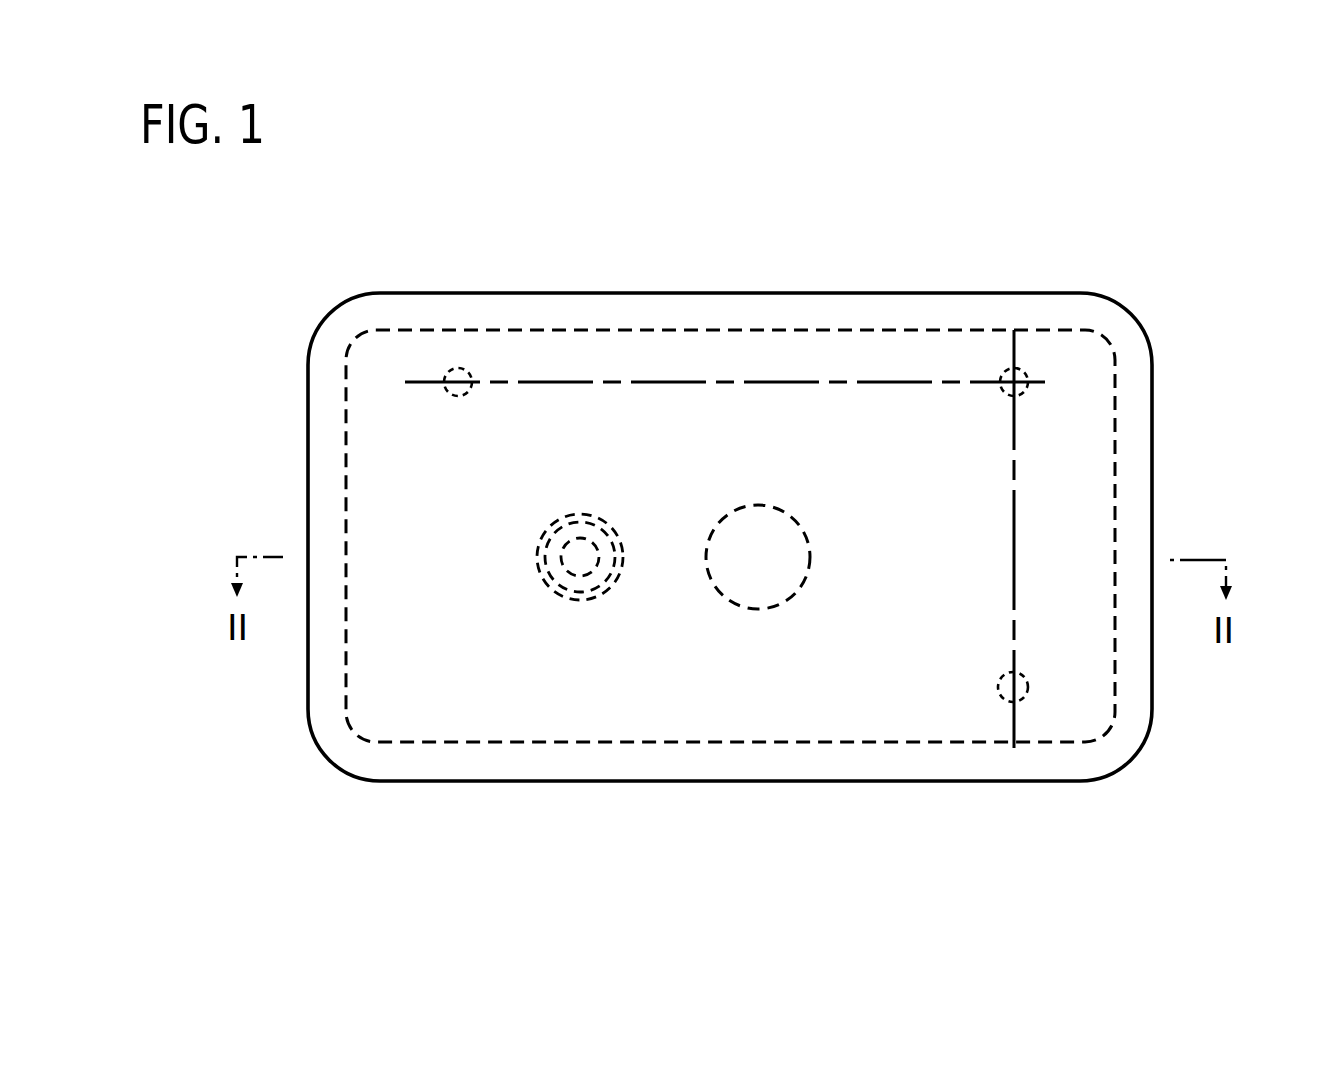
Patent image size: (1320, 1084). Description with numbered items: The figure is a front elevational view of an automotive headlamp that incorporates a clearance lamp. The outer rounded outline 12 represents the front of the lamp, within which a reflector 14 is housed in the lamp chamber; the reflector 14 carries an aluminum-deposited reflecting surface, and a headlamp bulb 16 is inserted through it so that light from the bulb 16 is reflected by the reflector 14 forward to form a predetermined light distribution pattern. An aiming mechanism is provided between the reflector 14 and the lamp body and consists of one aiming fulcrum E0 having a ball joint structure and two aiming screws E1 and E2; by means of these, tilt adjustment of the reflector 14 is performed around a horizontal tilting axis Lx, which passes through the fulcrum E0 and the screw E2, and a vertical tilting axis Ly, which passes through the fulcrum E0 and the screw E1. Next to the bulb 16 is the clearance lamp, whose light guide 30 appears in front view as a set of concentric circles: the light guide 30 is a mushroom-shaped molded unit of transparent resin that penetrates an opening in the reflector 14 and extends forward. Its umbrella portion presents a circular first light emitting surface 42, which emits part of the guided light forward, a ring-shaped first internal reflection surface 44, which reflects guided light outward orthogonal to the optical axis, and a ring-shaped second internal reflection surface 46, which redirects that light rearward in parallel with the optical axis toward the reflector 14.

The housing 12 is at (433, 697).
The reflector 14 is at (675, 332).
The headlamp bulb 16 is at (773, 506).
The light guide 30 is at (594, 540).
The first light emitting surface 42 is at (605, 590).
The first internal reflection surface 44 is at (580, 598).
The second internal reflection surface 46 is at (546, 590).
The horizontal tilting axis Lx is at (893, 382).
The vertical tilting axis Ly is at (1014, 460).
The aiming screw E2 is at (459, 372).
The aiming fulcrum E0 is at (1025, 373).
The aiming screw E1 is at (1024, 697).